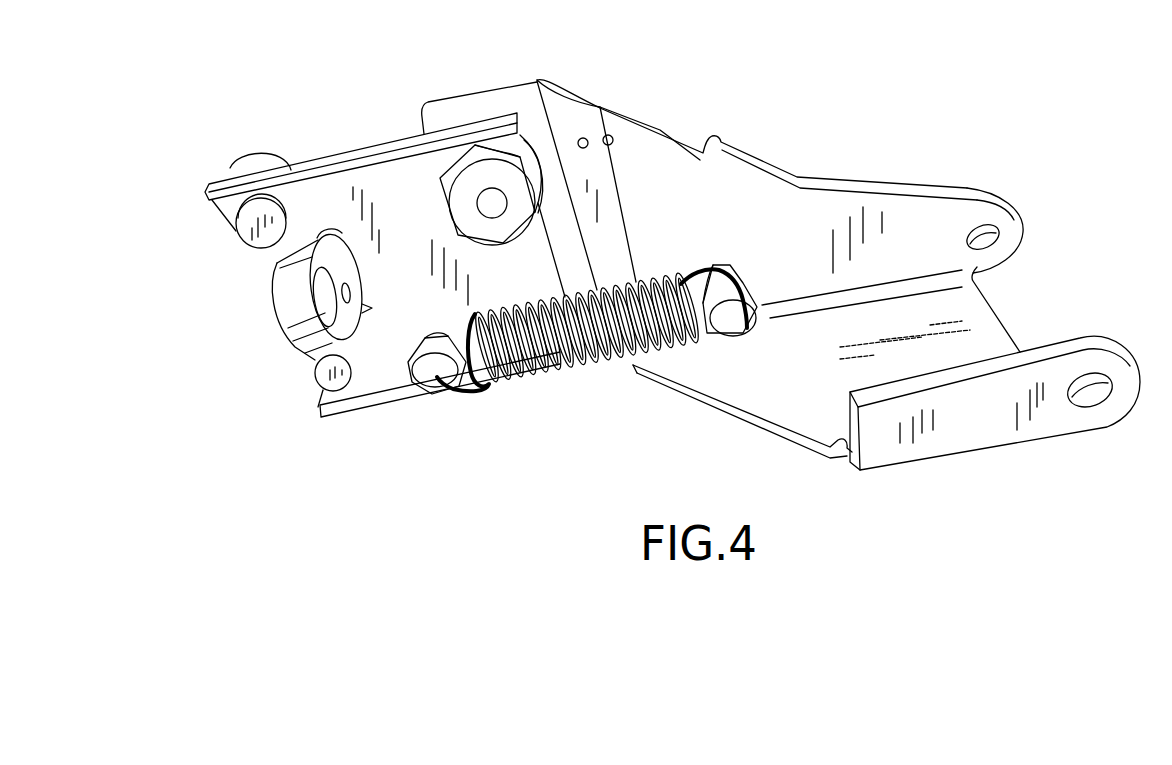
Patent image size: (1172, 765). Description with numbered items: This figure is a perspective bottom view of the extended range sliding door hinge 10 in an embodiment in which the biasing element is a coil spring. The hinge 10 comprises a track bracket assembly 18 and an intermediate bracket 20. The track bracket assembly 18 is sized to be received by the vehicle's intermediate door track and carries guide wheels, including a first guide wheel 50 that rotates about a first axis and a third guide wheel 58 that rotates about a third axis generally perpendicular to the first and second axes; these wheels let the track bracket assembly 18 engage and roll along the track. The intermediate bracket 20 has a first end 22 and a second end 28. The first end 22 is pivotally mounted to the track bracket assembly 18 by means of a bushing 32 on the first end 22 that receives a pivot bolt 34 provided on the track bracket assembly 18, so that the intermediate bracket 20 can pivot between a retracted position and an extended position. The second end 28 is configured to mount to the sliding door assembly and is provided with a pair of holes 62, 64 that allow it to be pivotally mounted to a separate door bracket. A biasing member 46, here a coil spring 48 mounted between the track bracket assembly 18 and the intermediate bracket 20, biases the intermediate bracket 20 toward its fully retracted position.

The extended range sliding door hinge 10 is at (155, 113).
The track bracket assembly 18 is at (318, 148).
The intermediate bracket 20 is at (748, 152).
The first end 22 is at (556, 86).
The second end 28 is at (967, 192).
The bushing 32 is at (525, 152).
The pivot bolt 34 is at (475, 150).
The biasing member 46 is at (558, 384).
The coil spring 48 is at (619, 368).
The first guide wheel 50 is at (252, 150).
The third guide wheel 58 is at (278, 340).
The hole 62 is at (992, 245).
The hole 64 is at (1098, 403).